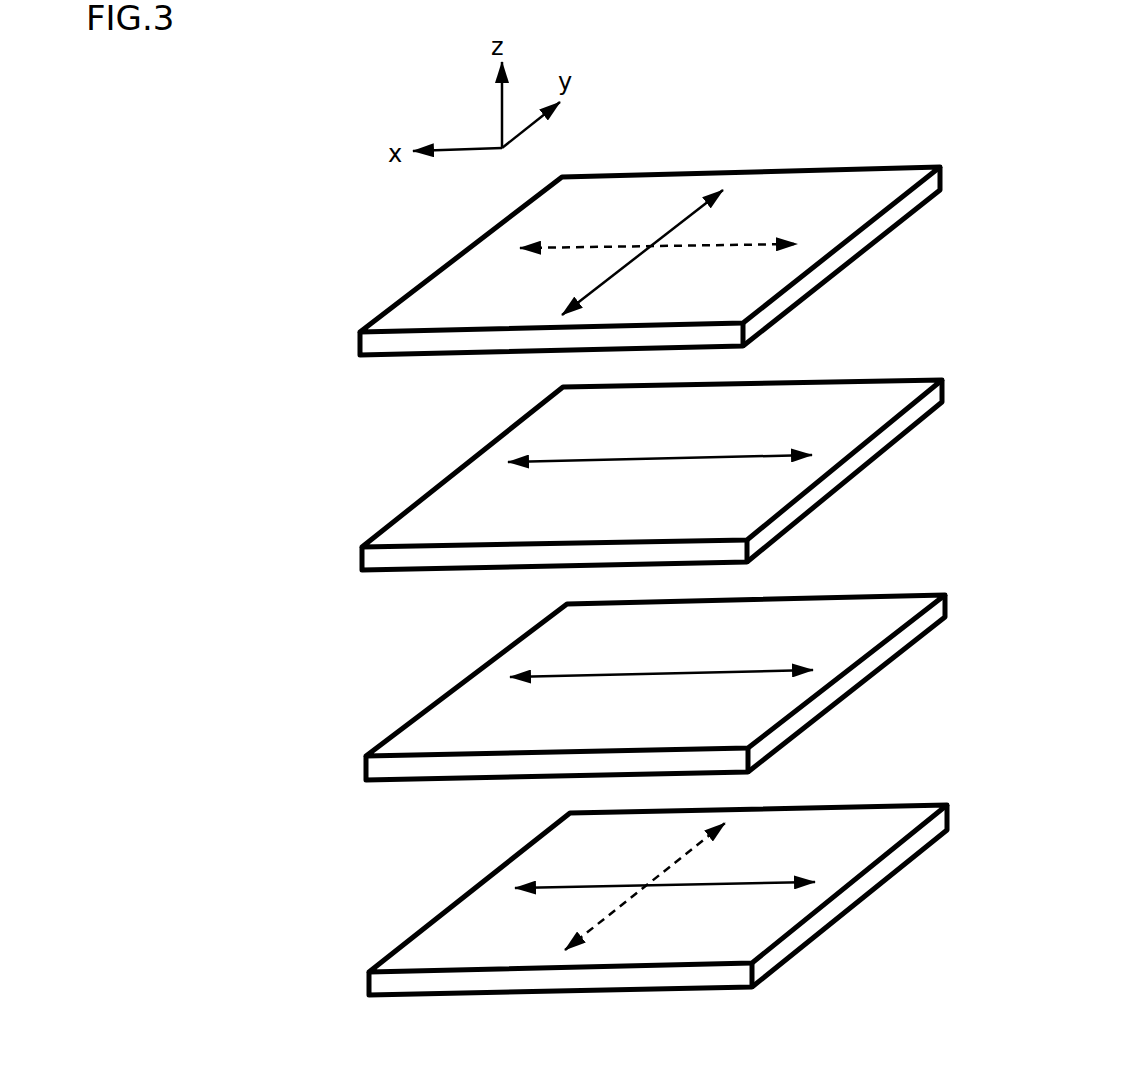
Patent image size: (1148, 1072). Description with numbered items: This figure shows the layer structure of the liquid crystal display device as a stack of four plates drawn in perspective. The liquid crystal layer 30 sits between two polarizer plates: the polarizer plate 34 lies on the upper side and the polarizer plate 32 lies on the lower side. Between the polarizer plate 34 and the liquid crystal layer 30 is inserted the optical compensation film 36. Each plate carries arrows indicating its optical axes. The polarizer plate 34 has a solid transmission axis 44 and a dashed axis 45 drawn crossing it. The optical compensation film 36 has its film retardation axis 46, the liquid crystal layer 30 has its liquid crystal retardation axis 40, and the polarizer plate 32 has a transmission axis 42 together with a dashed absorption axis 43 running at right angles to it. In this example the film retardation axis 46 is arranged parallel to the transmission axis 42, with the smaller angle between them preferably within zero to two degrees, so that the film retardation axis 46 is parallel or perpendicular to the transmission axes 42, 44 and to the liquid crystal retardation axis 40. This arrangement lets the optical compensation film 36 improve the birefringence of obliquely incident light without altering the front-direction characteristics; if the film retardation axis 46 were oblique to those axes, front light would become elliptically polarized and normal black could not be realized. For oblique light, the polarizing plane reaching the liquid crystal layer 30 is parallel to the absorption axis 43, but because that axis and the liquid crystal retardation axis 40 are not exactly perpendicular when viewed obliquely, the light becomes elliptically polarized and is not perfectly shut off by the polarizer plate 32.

The liquid crystal layer 30 is at (448, 697).
The polarizer plate 32 is at (450, 908).
The polarizer plate 34 is at (441, 268).
The optical compensation film 36 is at (442, 482).
The liquid crystal retardation axis 40 is at (658, 672).
The transmission axis 42 is at (728, 880).
The absorption axis 43 is at (670, 858).
The transmission axis 44 is at (677, 228).
The absorption axis of upper polarizer 45 is at (687, 250).
The film retardation axis 46 is at (655, 458).